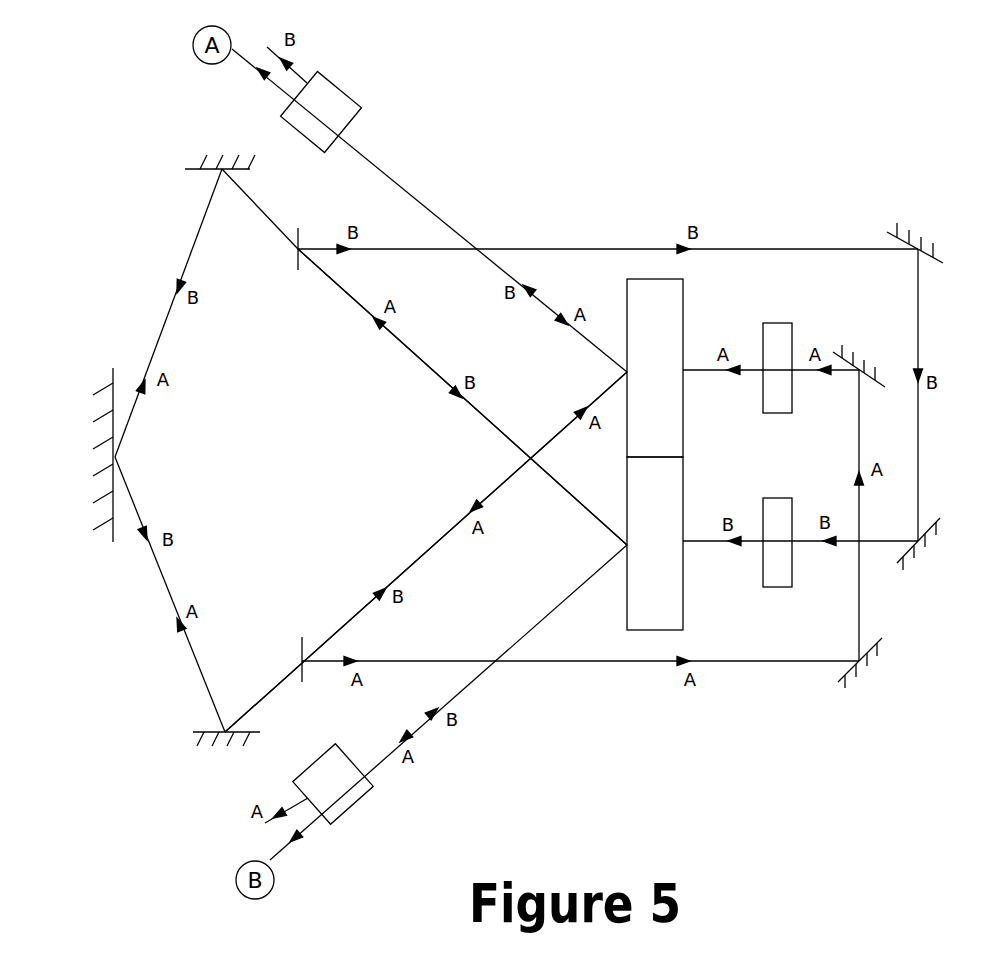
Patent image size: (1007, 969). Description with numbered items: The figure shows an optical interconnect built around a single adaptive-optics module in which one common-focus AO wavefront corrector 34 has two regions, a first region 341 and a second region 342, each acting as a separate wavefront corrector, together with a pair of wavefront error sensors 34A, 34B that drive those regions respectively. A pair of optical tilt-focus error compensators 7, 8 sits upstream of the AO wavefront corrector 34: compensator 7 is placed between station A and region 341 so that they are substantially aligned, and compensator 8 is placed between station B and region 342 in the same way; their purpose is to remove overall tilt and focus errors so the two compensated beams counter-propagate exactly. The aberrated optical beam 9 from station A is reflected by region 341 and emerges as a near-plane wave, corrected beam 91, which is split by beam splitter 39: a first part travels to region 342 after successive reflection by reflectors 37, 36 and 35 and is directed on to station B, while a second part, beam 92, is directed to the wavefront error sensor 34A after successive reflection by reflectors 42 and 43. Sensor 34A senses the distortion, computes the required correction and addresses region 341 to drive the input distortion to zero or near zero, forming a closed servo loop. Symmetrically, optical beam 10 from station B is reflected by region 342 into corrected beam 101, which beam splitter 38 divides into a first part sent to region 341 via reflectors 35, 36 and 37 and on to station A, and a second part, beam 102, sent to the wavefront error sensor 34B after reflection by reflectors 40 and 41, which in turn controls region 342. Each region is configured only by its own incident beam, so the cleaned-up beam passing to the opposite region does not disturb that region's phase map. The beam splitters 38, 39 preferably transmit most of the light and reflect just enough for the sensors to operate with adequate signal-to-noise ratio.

The optical tilt-focus error compensator 7 is at (345, 90).
The optical tilt-focus error compensator 8 is at (355, 806).
The optical beam 9 is at (575, 333).
The optical beam 10 is at (455, 699).
The AO wavefront corrector 34 is at (649, 458).
The first region of AO wavefront corrector 341 is at (657, 279).
The second region of AO wavefront corrector 342 is at (650, 631).
The wavefront error sensor 34A is at (778, 323).
The wavefront error sensor 34B is at (775, 498).
The reflector 35 is at (192, 169).
The reflector 36 is at (112, 370).
The reflector 37 is at (195, 733).
The beam splitter 38 is at (297, 256).
The beam splitter 39 is at (299, 651).
The reflector 40 is at (946, 262).
The reflector 41 is at (941, 519).
The reflector 42 is at (884, 640).
The reflector 43 is at (887, 385).
The corrected beam 91 is at (383, 330).
The beam 92 is at (369, 660).
The corrected beam 101 is at (517, 282).
The beam 102 is at (366, 248).